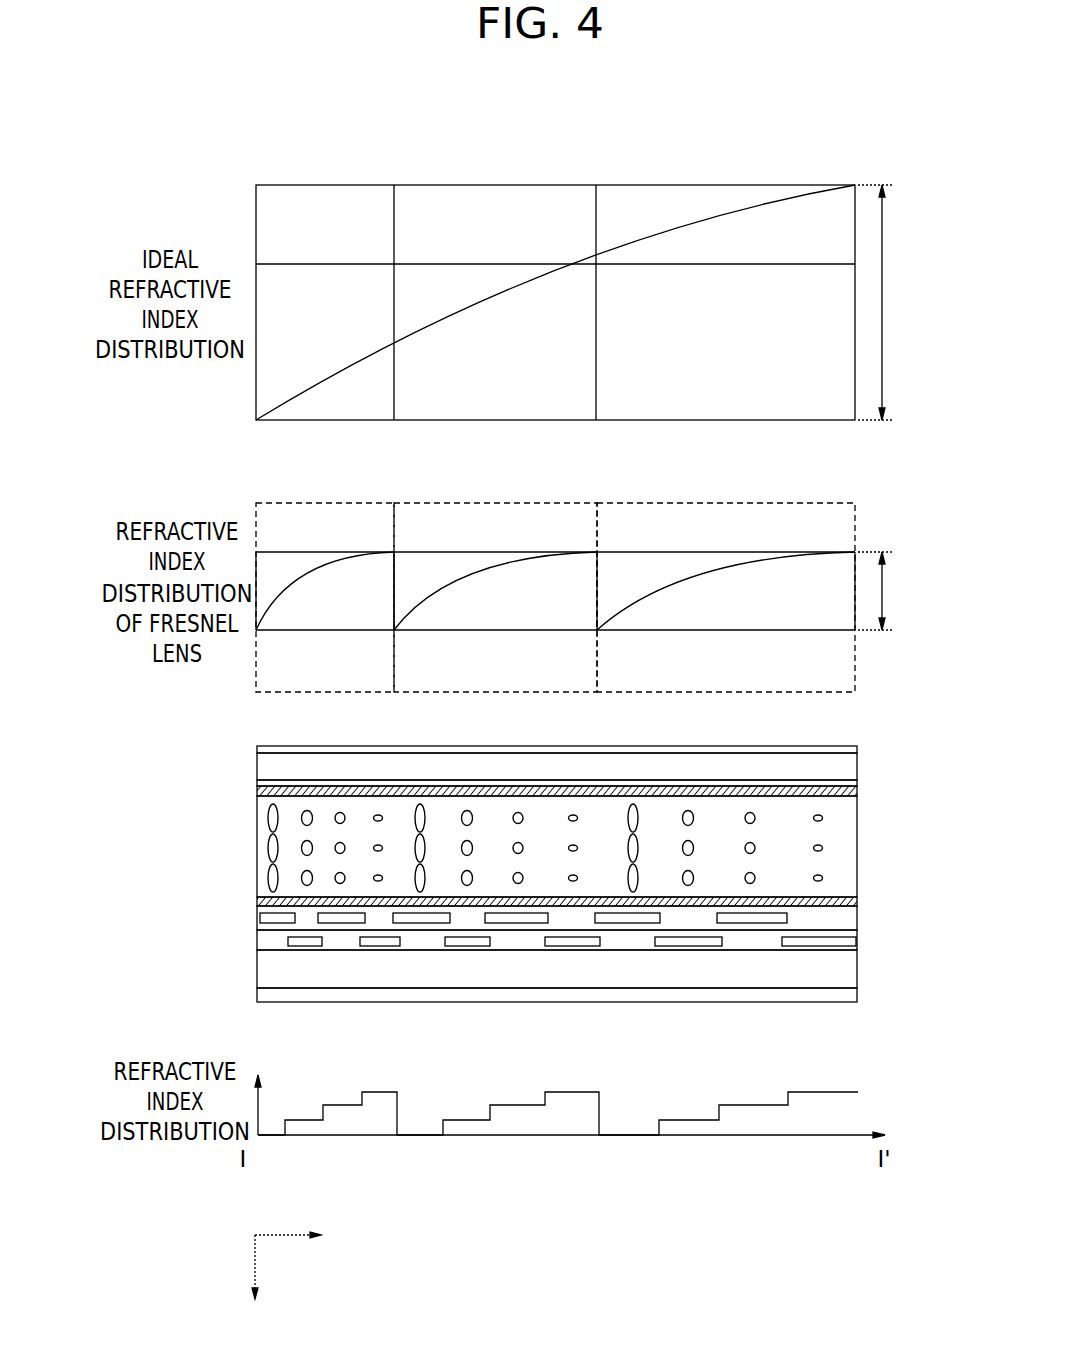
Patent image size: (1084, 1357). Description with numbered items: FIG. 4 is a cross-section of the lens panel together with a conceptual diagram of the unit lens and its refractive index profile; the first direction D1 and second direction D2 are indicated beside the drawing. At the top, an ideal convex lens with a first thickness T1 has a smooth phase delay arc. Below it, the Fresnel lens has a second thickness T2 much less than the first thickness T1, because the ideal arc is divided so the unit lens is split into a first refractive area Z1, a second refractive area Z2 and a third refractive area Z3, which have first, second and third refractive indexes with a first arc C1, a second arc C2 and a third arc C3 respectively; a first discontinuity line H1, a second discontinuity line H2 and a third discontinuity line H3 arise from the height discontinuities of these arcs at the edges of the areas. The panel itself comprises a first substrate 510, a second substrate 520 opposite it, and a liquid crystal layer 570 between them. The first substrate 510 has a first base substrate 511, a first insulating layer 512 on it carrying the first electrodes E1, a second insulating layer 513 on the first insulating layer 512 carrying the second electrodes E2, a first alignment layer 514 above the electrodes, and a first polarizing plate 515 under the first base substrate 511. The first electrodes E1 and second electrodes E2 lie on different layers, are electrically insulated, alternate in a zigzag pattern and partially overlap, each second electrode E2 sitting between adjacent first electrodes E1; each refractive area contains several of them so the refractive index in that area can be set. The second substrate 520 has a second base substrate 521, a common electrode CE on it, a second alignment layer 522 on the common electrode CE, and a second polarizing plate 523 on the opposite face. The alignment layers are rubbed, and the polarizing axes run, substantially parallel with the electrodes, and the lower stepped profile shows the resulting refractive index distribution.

The second polarizing plate 523 is at (257, 748).
The second base substrate 521 is at (257, 766).
The common electrode CE is at (257, 784).
The second alignment layer 522 is at (257, 792).
The liquid crystal layer 570 is at (862, 796).
The first alignment layer 514 is at (257, 900).
The second insulating layer 513 is at (262, 911).
The second electrodes E2 is at (305, 918).
The first electrodes E1 is at (275, 940).
The first insulating layer 512 is at (340, 944).
The first base substrate 511 is at (259, 977).
The first polarizing plate 515 is at (259, 999).
The second substrate 520 is at (551, 757).
The first substrate 510 is at (551, 941).
The first thickness T1 is at (888, 302).
The second thickness T2 is at (888, 591).
The first refractive area Z1 is at (324, 503).
The second refractive area Z2 is at (496, 503).
The third refractive area Z3 is at (726, 503).
The first arc C1 is at (308, 573).
The second arc C2 is at (480, 573).
The third arc C3 is at (710, 573).
The first discontinuity line H1 is at (394, 597).
The second discontinuity line H2 is at (597, 597).
The third discontinuity line H3 is at (855, 589).
The first direction D1 is at (305, 1235).
The second direction D2 is at (257, 1285).